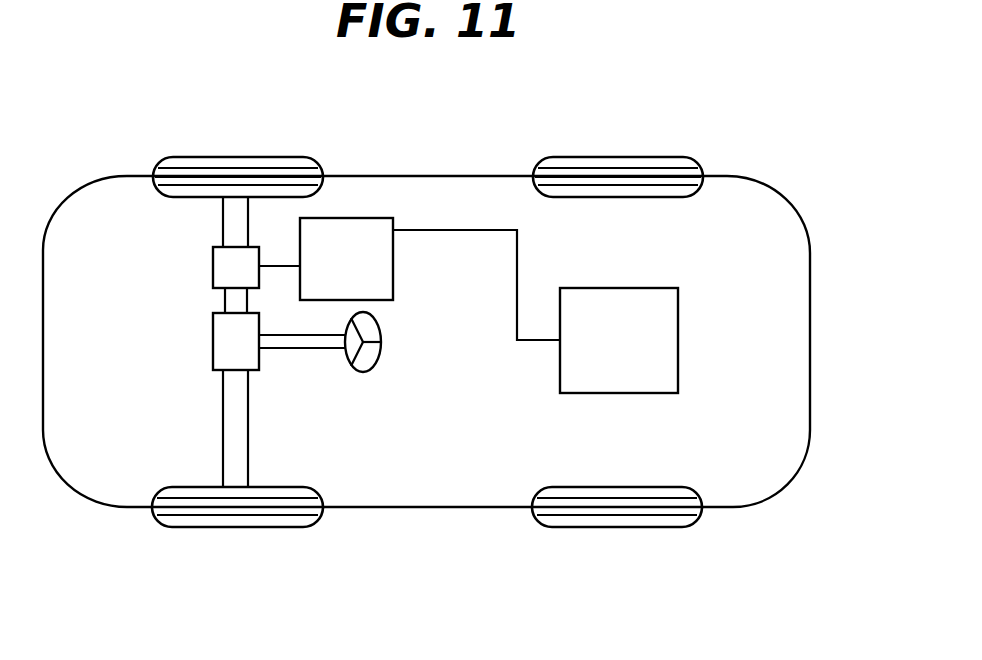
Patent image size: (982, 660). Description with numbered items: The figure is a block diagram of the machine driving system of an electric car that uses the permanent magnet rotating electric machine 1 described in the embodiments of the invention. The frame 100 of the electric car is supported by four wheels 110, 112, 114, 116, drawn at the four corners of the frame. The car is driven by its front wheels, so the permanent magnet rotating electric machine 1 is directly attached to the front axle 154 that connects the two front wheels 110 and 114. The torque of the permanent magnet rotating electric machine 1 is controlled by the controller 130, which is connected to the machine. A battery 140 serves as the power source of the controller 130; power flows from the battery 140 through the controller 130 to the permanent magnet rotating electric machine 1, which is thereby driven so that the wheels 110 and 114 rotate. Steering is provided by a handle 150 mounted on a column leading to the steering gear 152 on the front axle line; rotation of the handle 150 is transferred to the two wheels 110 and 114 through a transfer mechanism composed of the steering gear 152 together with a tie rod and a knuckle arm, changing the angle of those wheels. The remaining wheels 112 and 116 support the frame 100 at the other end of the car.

The permanent magnet rotating electric machine 1 is at (213, 262).
The frame 100 is at (431, 176).
The wheel 110 is at (238, 168).
The wheel 112 is at (626, 168).
The wheel 114 is at (237, 520).
The wheel 116 is at (623, 520).
The controller 130 is at (393, 266).
The battery 140 is at (678, 337).
The handle 150 is at (381, 331).
The steering gear 152 is at (213, 341).
The front axle 154 is at (225, 298).